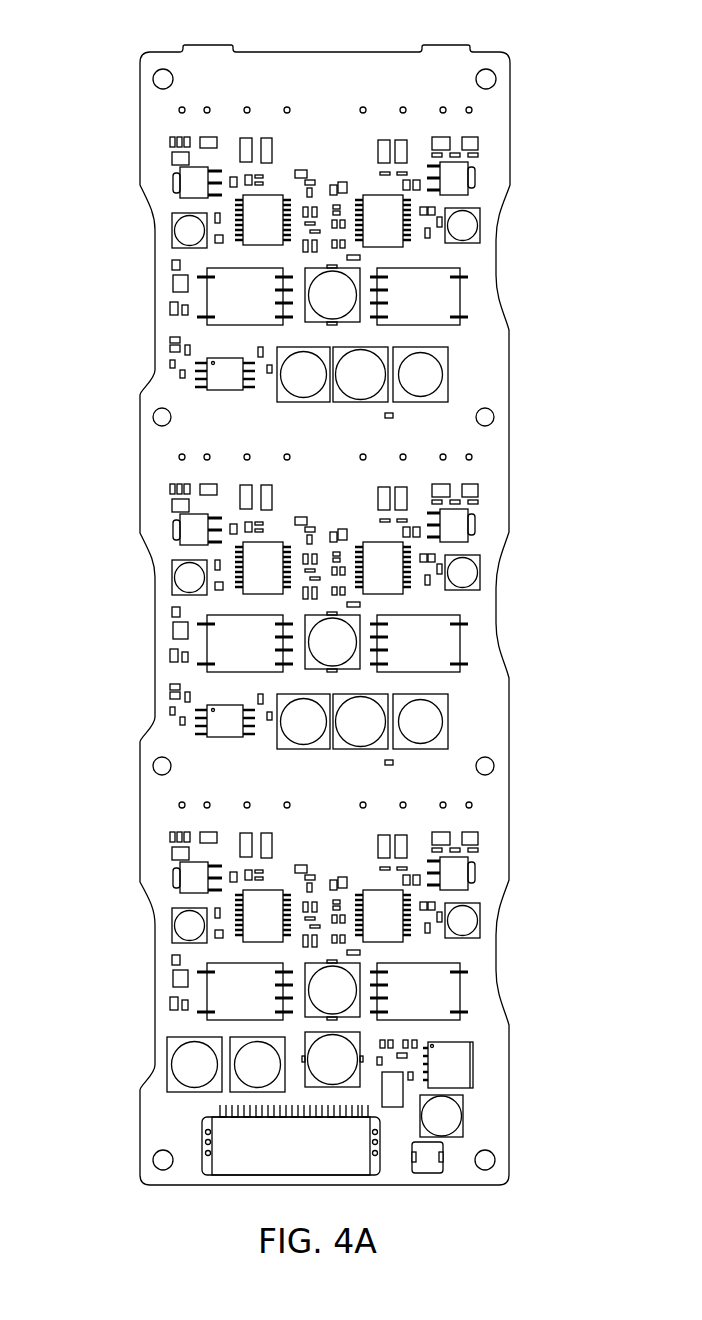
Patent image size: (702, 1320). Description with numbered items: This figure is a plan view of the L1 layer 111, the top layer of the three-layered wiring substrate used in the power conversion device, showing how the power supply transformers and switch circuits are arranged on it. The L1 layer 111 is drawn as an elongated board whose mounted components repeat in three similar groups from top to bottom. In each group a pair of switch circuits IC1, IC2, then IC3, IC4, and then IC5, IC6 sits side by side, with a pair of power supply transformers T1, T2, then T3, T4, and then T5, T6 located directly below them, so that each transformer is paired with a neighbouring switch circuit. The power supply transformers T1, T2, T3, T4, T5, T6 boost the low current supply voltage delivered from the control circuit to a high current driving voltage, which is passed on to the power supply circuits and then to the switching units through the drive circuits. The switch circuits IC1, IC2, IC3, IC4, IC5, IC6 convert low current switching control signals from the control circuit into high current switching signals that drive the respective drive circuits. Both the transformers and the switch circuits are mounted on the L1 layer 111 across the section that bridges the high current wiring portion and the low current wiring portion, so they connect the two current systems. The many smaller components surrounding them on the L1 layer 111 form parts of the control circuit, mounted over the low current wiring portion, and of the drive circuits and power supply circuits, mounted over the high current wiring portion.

The L1 layer 111 is at (333, 50).
The switch circuit IC1 is at (258, 212).
The switch circuit IC2 is at (383, 218).
The switch circuit IC3 is at (262, 567).
The switch circuit IC4 is at (388, 573).
The switch circuit IC5 is at (262, 917).
The switch circuit IC6 is at (387, 917).
The power supply transformer T1 is at (233, 297).
The power supply transformer T2 is at (418, 293).
The power supply transformer T3 is at (230, 647).
The power supply transformer T4 is at (418, 653).
The power supply transformer T5 is at (243, 997).
The power supply transformer T6 is at (427, 992).